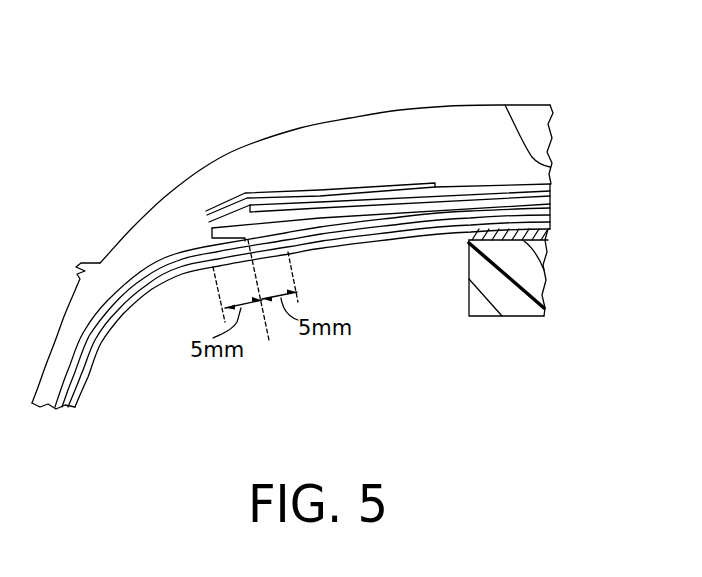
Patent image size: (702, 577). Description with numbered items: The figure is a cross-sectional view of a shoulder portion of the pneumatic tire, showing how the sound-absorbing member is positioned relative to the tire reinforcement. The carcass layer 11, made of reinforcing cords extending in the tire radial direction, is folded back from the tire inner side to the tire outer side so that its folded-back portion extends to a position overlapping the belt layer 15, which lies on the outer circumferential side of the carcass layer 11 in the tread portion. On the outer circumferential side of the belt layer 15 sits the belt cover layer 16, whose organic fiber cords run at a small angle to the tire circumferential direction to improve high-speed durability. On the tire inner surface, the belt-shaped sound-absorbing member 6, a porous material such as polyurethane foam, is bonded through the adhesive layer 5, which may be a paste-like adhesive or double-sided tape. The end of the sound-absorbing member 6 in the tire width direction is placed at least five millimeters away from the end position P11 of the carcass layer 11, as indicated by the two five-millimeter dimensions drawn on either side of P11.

The carcass layer 11 is at (158, 276).
The belt layer 15 is at (392, 210).
The belt cover layer 16 is at (336, 188).
The adhesive layer 5 is at (493, 242).
The sound-absorbing member 6 is at (526, 306).
The end position of the carcass layer P11 is at (266, 325).